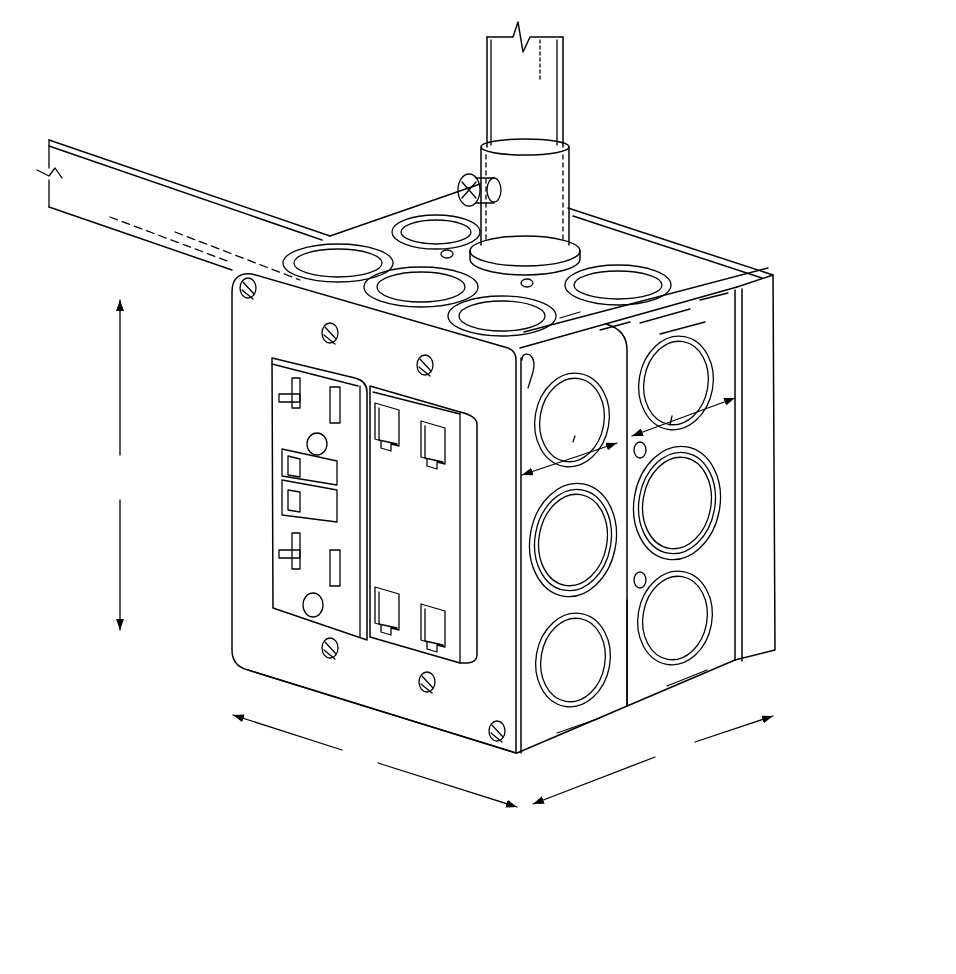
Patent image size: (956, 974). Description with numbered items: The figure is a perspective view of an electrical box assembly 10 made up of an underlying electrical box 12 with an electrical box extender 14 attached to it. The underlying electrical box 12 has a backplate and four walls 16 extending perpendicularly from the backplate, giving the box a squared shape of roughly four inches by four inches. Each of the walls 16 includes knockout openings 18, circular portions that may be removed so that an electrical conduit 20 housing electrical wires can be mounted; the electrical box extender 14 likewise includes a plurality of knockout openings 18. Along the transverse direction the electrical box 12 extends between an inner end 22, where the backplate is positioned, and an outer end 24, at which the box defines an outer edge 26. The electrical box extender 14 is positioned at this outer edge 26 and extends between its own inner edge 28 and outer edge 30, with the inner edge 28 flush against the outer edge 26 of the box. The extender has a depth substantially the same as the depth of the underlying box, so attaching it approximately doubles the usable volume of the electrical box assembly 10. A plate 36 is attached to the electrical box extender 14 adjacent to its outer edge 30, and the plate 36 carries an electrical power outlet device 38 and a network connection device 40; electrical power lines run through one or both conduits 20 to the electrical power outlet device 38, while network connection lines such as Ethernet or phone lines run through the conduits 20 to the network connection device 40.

The electrical box assembly 10 is at (324, 172).
The underlying electrical box 12 is at (683, 284).
The electrical box extender 14 is at (620, 470).
The walls 16 is at (585, 257).
The knockout openings 18 is at (351, 258).
The electrical conduit 20 is at (175, 197).
The inner end 22 is at (757, 320).
The outer end 24 is at (650, 378).
The outer edge 26 is at (571, 312).
The inner edge 28 is at (640, 632).
The outer edge 30 is at (514, 678).
The plate 36 is at (390, 683).
The electrical power outlet device 38 is at (285, 430).
The network connection device 40 is at (433, 522).